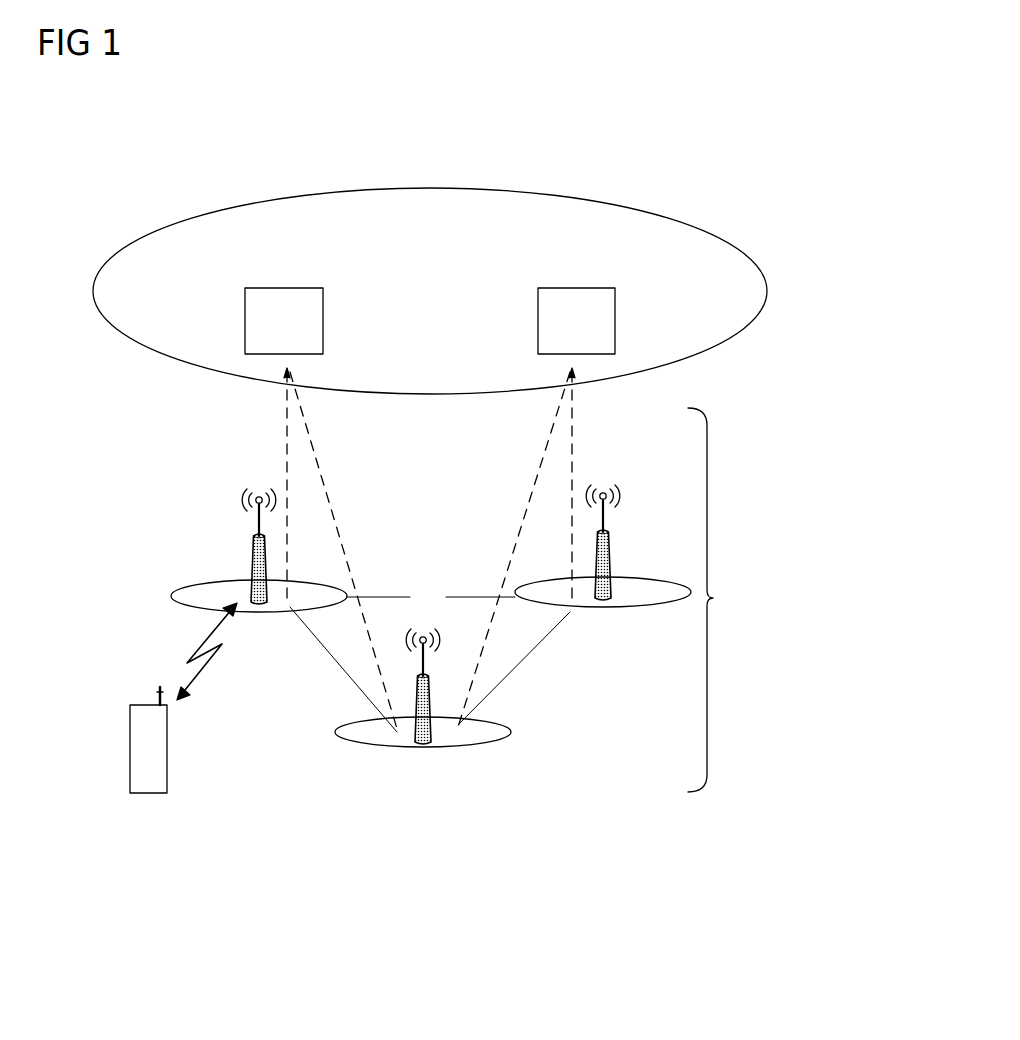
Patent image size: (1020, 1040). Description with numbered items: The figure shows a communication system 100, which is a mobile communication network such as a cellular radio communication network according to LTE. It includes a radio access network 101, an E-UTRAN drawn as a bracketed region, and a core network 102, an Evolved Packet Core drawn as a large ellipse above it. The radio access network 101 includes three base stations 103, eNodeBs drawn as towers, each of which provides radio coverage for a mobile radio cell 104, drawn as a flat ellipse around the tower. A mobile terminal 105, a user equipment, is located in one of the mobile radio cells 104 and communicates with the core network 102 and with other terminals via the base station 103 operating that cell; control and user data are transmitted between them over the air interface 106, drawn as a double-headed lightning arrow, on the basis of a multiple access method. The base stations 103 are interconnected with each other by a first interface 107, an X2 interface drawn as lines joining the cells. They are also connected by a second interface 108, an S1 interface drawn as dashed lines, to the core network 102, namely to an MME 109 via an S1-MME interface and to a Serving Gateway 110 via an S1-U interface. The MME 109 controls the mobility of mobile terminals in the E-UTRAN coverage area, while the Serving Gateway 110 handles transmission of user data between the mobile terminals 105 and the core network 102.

The communication system 100 is at (742, 117).
The radio access network 101 is at (805, 575).
The core network 102 is at (757, 262).
The base station 103 is at (248, 548).
The mobile radio cell 104 is at (185, 598).
The mobile terminal 105 is at (150, 794).
The air interface 106 is at (222, 660).
The first interface 107 is at (422, 585).
The second interface 108 is at (284, 420).
The MME 109 is at (282, 287).
The Serving Gateway 110 is at (578, 287).